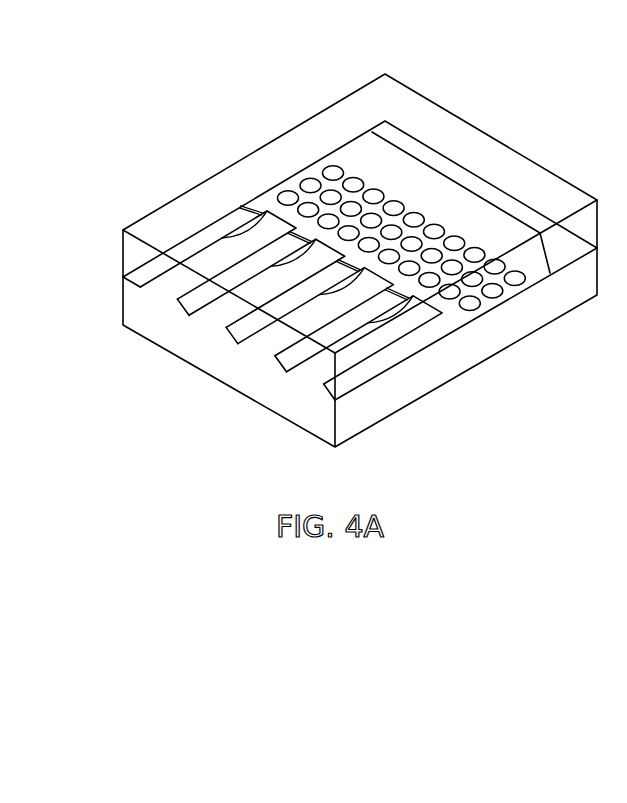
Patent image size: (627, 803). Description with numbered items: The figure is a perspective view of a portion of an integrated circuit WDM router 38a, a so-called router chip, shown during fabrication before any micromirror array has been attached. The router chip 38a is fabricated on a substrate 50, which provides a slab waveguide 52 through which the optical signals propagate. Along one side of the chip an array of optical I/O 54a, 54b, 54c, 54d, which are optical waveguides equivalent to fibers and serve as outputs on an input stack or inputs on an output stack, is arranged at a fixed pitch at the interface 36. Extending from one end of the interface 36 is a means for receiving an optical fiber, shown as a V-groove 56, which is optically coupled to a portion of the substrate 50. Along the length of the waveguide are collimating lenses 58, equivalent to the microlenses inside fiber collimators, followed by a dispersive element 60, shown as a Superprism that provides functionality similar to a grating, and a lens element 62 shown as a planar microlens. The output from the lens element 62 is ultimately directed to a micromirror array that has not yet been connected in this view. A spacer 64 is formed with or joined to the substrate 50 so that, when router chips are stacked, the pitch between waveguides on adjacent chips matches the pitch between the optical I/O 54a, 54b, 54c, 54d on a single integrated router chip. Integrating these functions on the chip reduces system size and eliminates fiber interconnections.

The integrated circuit WDM router 38a is at (172, 115).
The spacer 64 is at (300, 126).
The lens element 62 is at (365, 143).
The dispersive element 60 is at (517, 284).
The slab waveguide 52 is at (490, 303).
The collimating lenses 58 is at (447, 334).
The substrate 50 is at (422, 385).
The V-groove 56 is at (325, 397).
The interface 36 is at (215, 372).
The optical I/O 54a is at (149, 276).
The optical I/O 54b is at (195, 307).
The optical I/O 54c is at (250, 328).
The optical I/O 54d is at (298, 368).